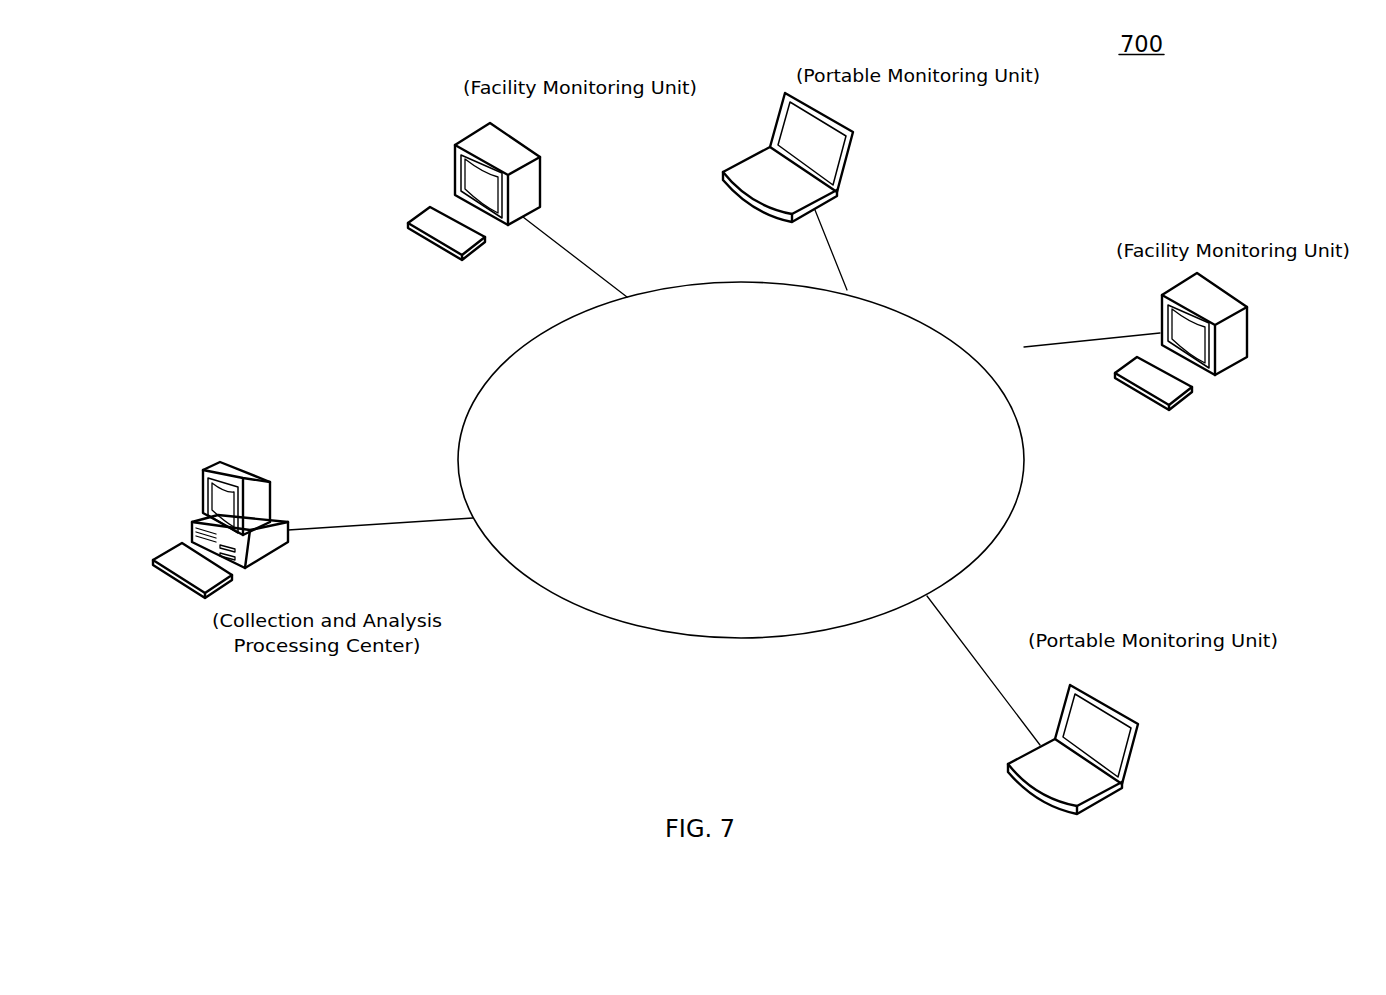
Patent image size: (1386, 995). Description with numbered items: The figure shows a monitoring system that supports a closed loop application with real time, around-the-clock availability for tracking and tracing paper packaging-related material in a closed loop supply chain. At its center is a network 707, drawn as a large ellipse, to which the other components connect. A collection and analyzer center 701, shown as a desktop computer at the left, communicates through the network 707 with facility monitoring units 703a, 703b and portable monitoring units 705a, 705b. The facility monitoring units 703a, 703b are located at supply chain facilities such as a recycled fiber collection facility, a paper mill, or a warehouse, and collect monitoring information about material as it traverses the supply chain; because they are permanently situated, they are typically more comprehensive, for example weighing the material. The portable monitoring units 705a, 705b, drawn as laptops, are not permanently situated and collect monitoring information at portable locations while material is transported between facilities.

The collection and analyzer center 701 is at (253, 472).
The facility monitoring unit 703a is at (525, 142).
The facility monitoring unit 703b is at (1233, 372).
The portable monitoring unit 705a is at (850, 128).
The portable monitoring unit 705b is at (1135, 747).
The network 707 is at (1022, 483).